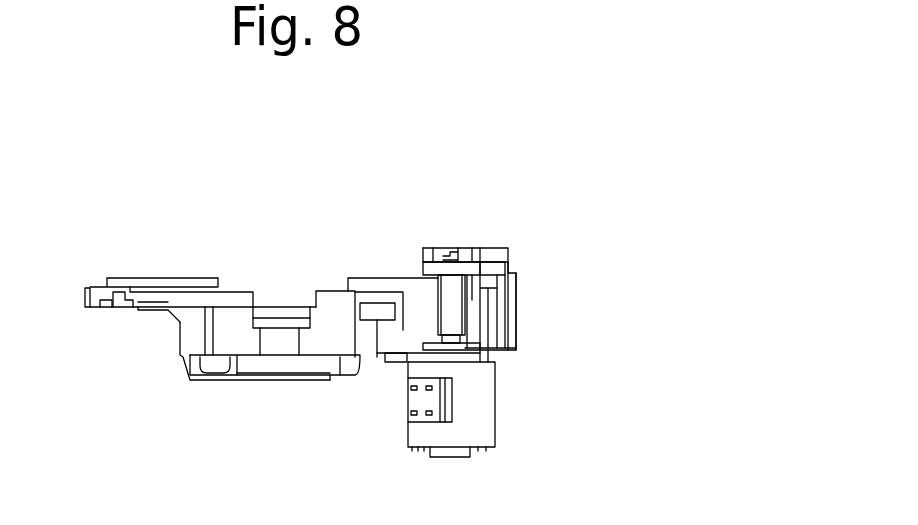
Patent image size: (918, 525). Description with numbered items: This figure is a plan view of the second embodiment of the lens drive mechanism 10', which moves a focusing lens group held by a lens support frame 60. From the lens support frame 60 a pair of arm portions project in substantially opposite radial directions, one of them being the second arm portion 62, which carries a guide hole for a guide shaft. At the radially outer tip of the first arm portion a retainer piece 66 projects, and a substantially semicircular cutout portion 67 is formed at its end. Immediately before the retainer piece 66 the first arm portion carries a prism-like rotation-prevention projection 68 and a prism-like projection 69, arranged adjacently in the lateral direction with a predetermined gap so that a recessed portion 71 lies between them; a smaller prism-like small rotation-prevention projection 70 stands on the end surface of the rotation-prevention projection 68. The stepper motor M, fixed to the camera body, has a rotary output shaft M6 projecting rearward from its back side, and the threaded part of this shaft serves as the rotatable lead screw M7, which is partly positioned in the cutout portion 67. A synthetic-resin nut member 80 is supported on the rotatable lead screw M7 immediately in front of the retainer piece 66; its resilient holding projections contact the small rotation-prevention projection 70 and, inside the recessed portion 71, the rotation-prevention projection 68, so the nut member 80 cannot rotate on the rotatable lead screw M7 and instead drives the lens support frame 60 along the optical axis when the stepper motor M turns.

The second arm portion 62 is at (120, 287).
The lens support frame 60 is at (330, 292).
The retainer piece 66 is at (428, 248).
The cutout portion 67 is at (430, 248).
The nut member 80 is at (472, 248).
The rotatable lead screw M7 is at (447, 315).
The recessed portion 71 is at (486, 347).
The small rotation-prevention projection 70 is at (500, 310).
The prism-like projection 69 is at (505, 325).
The rotary output shaft M6 is at (437, 346).
The rotation-prevention projection 68 is at (496, 365).
The stepper motor M is at (480, 420).
The lens drive mechanism 10' is at (688, 272).